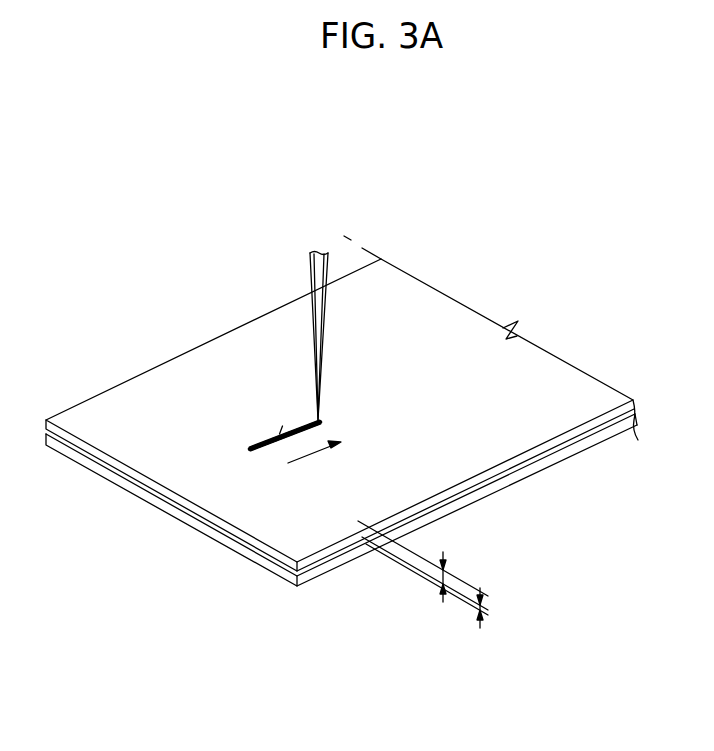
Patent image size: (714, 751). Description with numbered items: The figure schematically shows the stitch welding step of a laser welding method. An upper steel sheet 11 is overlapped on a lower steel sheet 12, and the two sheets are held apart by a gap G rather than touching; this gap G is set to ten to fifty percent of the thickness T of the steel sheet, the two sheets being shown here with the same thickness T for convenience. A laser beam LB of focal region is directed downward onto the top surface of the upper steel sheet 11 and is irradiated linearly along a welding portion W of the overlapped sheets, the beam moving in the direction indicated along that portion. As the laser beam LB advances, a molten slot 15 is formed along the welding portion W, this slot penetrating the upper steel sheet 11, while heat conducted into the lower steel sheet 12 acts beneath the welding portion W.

The upper steel sheet 11 is at (513, 443).
The lower steel sheet 12 is at (497, 490).
The molten slot 15 is at (252, 432).
The welding portion W is at (278, 420).
The laser beam LB is at (310, 268).
The thickness T is at (447, 580).
The gap G is at (483, 610).